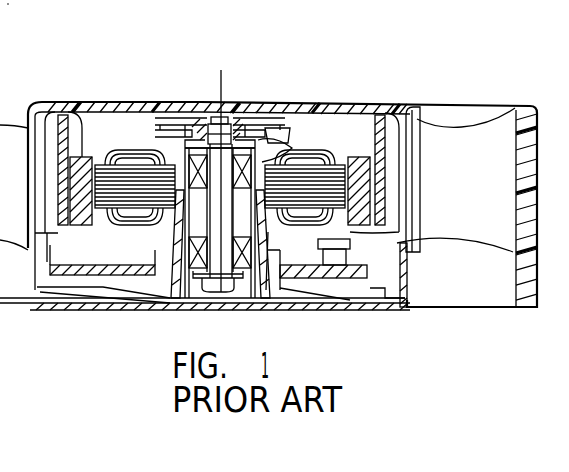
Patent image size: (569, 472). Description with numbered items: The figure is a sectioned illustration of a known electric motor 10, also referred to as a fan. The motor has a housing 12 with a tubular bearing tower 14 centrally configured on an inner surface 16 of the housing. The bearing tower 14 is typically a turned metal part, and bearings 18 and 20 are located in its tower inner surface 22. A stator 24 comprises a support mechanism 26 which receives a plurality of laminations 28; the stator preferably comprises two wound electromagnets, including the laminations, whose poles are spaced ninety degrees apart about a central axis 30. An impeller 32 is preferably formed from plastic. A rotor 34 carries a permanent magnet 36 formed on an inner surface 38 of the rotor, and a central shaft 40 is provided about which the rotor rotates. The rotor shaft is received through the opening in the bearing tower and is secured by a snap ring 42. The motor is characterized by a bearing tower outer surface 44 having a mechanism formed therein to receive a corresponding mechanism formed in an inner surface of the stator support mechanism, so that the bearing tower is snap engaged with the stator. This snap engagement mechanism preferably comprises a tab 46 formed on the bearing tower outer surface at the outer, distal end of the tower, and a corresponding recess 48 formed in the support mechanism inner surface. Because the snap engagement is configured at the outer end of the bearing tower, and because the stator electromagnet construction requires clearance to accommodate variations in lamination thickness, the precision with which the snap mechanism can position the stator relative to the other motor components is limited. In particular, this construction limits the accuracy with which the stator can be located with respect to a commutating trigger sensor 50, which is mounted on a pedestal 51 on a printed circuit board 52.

The electric motor 10 is at (117, 66).
The housing 12 is at (58, 306).
The bearing tower 14 is at (276, 292).
The inner surface 16 is at (382, 300).
The bearing 18 is at (177, 157).
The bearing 20 is at (174, 304).
The tower inner surface 22 is at (174, 243).
The stator 24 is at (125, 152).
The support mechanism 26 is at (122, 230).
The laminations 28 is at (336, 165).
The central axis 30 is at (222, 92).
The impeller 32 is at (77, 103).
The rotor 34 is at (130, 120).
The permanent magnet 36 is at (401, 191).
The inner surface 38 is at (72, 127).
The central shaft 40 is at (206, 290).
The snap ring 42 is at (238, 292).
The bearing tower outer surface 44 is at (270, 248).
The tab 46 is at (262, 148).
The recess 48 is at (283, 158).
The commutating trigger sensor 50 is at (403, 238).
The pedestal 51 is at (408, 260).
The printed circuit board 52 is at (388, 277).